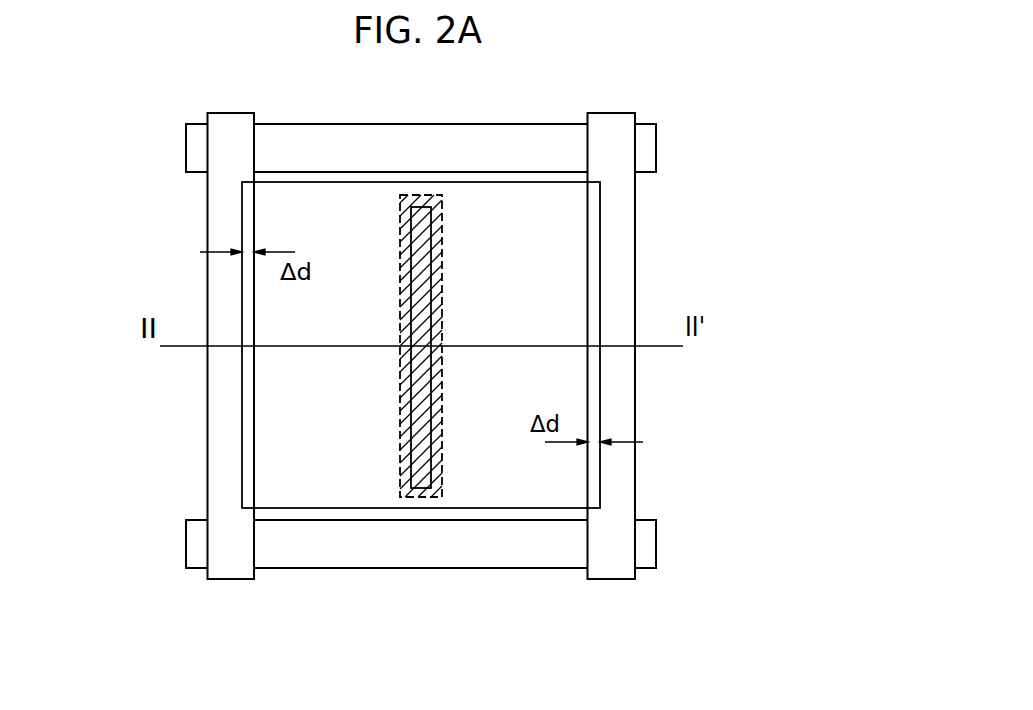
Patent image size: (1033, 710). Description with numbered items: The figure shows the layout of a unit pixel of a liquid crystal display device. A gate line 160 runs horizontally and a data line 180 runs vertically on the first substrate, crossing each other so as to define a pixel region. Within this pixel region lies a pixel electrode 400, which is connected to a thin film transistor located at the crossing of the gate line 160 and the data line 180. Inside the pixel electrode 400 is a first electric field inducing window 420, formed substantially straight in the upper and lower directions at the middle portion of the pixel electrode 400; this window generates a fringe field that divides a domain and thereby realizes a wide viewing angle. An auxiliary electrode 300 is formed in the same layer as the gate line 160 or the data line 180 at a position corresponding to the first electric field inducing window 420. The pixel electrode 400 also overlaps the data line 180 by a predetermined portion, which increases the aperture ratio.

The gate line 160 is at (450, 560).
The data line 180 is at (615, 568).
The pixel electrode 400 is at (592, 237).
The auxiliary electrode 300 is at (410, 412).
The first electric field inducing window 420 is at (425, 285).